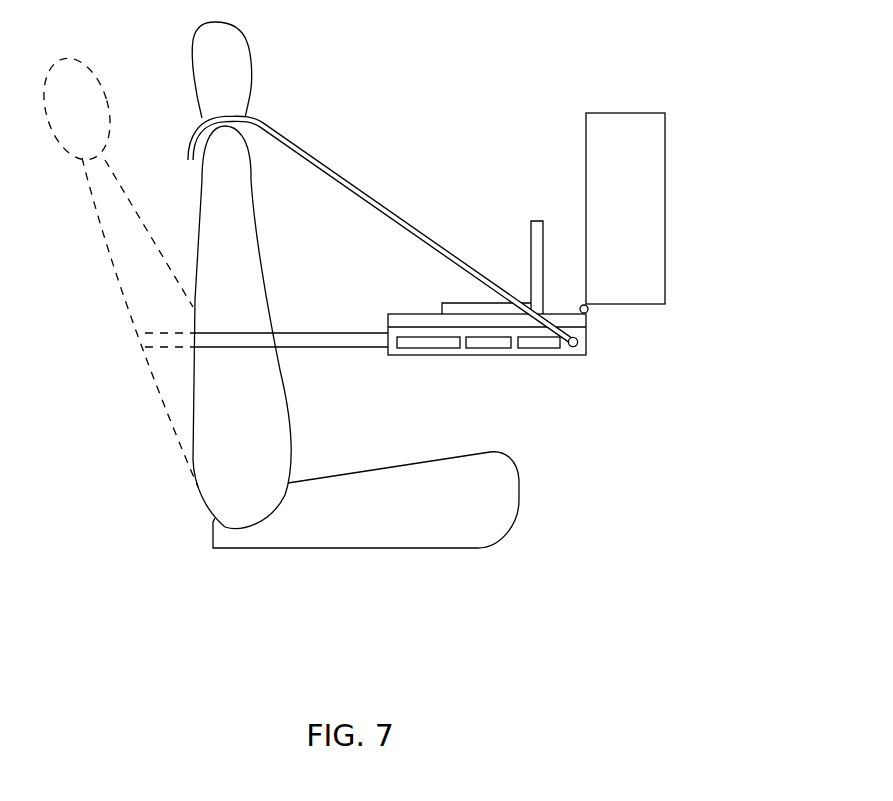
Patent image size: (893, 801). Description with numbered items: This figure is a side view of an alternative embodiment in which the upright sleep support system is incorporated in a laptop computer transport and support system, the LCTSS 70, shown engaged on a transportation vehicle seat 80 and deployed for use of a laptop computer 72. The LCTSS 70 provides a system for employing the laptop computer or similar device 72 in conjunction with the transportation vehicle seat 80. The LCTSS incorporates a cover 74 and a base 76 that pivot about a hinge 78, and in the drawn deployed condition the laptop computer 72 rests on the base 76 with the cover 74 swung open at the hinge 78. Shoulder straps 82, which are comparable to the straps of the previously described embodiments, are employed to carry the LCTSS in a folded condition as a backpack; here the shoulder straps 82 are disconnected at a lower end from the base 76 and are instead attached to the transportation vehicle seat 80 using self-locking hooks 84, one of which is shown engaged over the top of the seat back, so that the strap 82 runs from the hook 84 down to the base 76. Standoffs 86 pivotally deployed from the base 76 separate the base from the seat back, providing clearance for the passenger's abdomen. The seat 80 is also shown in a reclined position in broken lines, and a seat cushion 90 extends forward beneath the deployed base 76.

The laptop computer transport and support system (LCTSS) 70 is at (703, 318).
The laptop computer 72 is at (531, 243).
The cover 74 is at (665, 223).
The base 76 is at (472, 357).
The hinge 78 is at (588, 312).
The transportation vehicle seat 80 is at (248, 255).
The shoulder straps 82 is at (290, 137).
The self-locking hooks 84 is at (190, 130).
The standoffs 86 is at (341, 333).
The seat cushion 90 is at (470, 478).